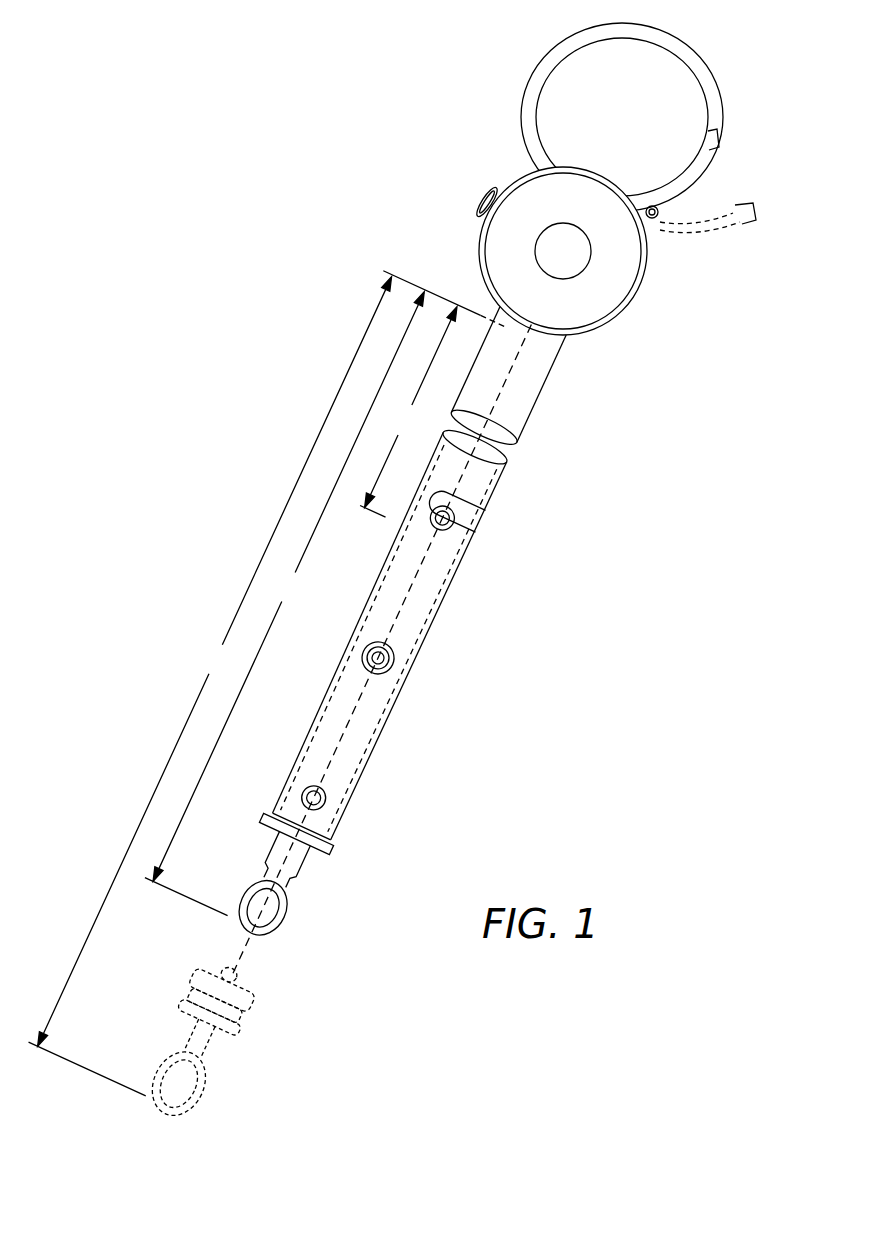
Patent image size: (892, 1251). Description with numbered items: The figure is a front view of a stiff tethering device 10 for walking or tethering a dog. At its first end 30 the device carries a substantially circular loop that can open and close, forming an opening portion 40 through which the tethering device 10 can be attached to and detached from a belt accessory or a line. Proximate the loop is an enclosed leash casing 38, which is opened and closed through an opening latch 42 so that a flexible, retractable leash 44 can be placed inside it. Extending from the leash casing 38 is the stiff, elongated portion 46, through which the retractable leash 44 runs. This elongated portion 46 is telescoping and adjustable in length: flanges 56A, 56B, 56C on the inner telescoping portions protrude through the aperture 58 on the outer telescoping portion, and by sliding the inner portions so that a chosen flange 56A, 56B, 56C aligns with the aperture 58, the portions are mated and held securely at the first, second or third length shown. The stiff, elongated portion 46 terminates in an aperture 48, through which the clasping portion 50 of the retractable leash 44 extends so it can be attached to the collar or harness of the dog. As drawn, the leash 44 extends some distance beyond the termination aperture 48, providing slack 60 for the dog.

The tethering device 10 is at (312, 205).
The first end 30 is at (548, 60).
The leash casing 38 is at (644, 306).
The opening portion 40 is at (683, 197).
The opening latch 42 is at (480, 188).
The retractable leash 44 is at (527, 382).
The stiff, elongated portion 46 is at (450, 618).
The aperture 48 is at (333, 843).
The clasping portion 50 is at (288, 915).
The flange 56A is at (452, 523).
The flange 56B is at (392, 667).
The flange 56C is at (327, 800).
The aperture 58 is at (453, 497).
The slack 60 is at (240, 975).